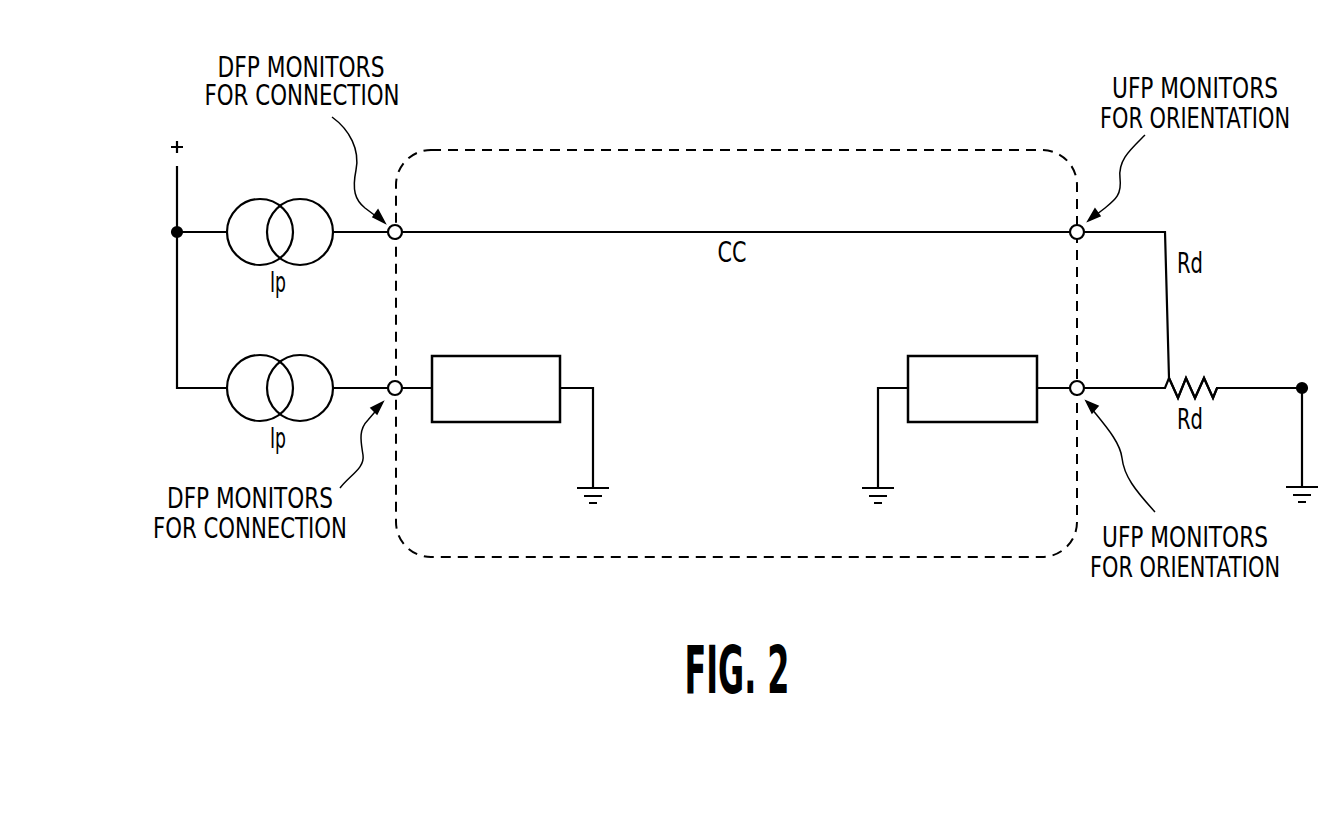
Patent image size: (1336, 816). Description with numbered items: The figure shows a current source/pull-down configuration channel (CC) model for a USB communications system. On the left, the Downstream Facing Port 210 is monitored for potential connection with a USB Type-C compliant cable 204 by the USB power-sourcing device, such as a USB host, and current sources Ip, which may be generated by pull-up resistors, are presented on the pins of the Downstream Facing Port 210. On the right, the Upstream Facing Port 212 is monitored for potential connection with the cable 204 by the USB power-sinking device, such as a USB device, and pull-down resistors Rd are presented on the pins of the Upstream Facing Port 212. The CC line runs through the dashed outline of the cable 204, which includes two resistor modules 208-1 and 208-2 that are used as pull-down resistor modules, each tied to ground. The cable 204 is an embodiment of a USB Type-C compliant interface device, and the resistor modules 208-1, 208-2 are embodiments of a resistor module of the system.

The USB Type-C compliant cable 204 is at (843, 150).
The resistor module 208-1 is at (463, 404).
The resistor module 208-2 is at (940, 404).
The Downstream Facing Port 210 is at (392, 382).
The Upstream Facing Port 212 is at (1080, 382).